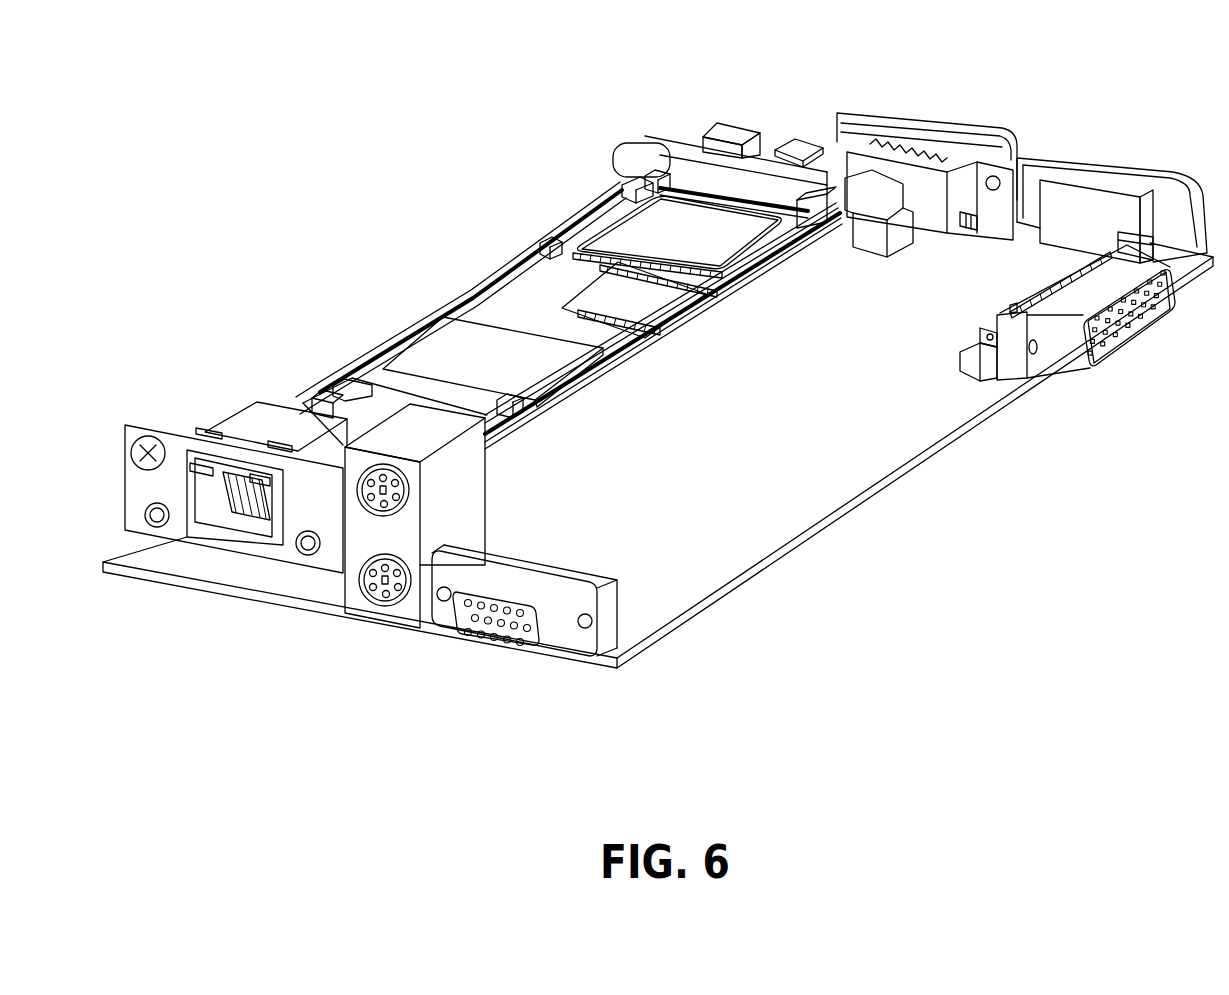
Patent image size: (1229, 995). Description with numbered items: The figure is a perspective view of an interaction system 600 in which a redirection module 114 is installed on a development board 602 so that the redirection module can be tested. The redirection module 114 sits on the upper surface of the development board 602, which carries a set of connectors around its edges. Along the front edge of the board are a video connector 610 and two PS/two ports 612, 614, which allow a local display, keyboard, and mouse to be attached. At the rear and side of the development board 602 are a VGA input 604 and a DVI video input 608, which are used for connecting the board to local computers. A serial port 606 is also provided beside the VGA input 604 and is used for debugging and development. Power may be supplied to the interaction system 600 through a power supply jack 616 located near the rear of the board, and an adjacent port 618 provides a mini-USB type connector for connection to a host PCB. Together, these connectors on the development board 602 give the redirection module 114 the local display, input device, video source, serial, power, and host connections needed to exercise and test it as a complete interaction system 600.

The interaction system 600 is at (370, 186).
The development board 602 is at (760, 543).
The redirection module 114 is at (640, 401).
The VGA input 604 is at (950, 140).
The RS-232 serial port 606 is at (1118, 180).
The DVI video input 608 is at (1128, 341).
The video connector 610 is at (493, 633).
The PS/2 port 612 is at (387, 597).
The PS/2 port 614 is at (367, 512).
The power supply jack 616 is at (735, 145).
The port 618 is at (798, 150).